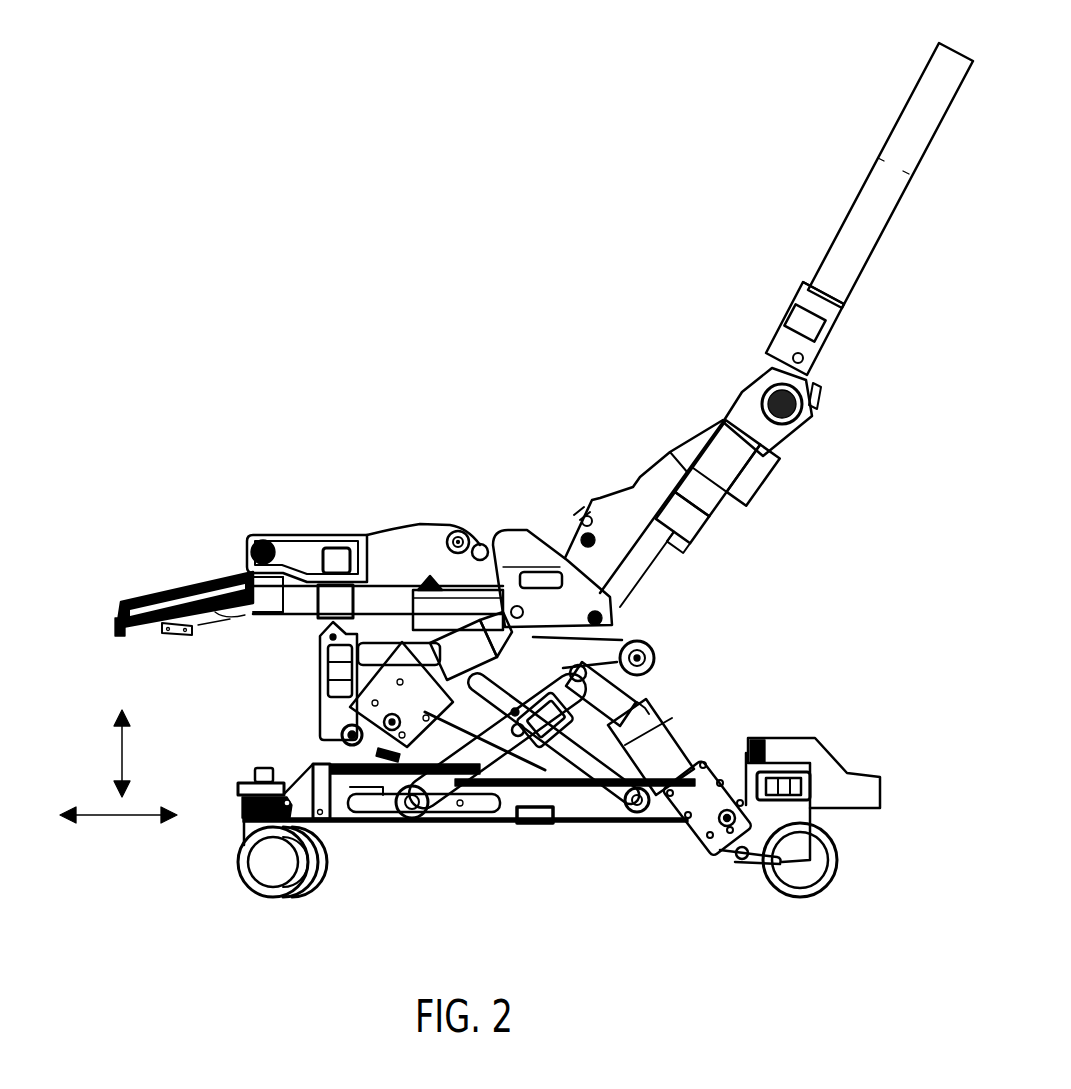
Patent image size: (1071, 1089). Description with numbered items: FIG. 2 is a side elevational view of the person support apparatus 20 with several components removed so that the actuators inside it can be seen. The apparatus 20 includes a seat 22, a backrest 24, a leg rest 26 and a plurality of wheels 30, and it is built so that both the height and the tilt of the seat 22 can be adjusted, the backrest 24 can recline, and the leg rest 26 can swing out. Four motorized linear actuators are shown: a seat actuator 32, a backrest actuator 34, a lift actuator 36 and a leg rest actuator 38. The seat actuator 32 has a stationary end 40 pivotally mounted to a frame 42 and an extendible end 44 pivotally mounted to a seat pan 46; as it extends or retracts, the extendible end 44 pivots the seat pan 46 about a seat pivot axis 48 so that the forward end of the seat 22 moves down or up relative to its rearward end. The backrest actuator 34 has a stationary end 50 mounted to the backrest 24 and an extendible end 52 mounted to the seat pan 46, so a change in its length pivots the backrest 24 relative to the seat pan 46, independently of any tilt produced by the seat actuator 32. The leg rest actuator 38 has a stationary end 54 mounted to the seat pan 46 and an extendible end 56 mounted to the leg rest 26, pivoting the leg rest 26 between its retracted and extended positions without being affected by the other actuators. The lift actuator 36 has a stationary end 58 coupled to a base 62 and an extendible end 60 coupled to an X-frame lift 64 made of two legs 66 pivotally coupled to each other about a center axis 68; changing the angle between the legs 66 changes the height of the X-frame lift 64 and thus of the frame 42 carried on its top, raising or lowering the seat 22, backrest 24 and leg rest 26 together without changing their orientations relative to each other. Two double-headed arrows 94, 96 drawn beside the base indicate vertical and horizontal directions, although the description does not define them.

The person support apparatus 20 is at (572, 86).
The seat 22 is at (427, 494).
The backrest 24 is at (896, 294).
The leg rest 26 is at (161, 576).
The wheels 30 is at (248, 857).
The seat actuator 32 is at (456, 680).
The backrest actuator 34 is at (722, 490).
The lift actuator 36 is at (660, 735).
The leg rest actuator 38 is at (368, 550).
The stationary end 40 is at (330, 708).
The frame 42 is at (590, 642).
The extendible end 44 is at (497, 630).
The seat pan 46 is at (397, 545).
The seat pivot axis 48 is at (436, 575).
The stationary end 50 is at (775, 445).
The extendible end 52 is at (640, 566).
The stationary end 54 is at (461, 600).
The extendible end 56 is at (300, 606).
The stationary end 58 is at (698, 822).
The extendible end 60 is at (605, 695).
The base 62 is at (573, 812).
The X-frame lift 64 is at (609, 818).
The legs 66 is at (607, 783).
The center axis 68 is at (514, 714).
The vertical direction 94 is at (122, 755).
The horizontal direction 96 is at (117, 817).